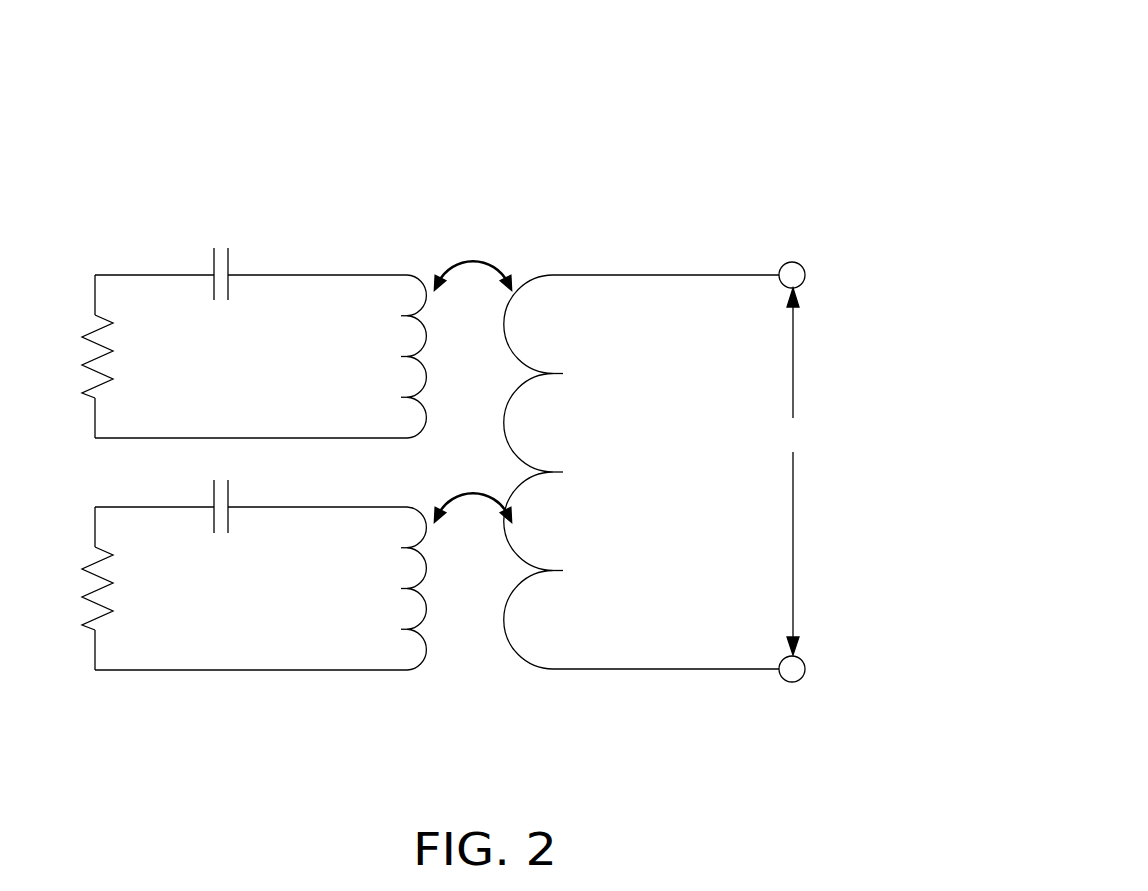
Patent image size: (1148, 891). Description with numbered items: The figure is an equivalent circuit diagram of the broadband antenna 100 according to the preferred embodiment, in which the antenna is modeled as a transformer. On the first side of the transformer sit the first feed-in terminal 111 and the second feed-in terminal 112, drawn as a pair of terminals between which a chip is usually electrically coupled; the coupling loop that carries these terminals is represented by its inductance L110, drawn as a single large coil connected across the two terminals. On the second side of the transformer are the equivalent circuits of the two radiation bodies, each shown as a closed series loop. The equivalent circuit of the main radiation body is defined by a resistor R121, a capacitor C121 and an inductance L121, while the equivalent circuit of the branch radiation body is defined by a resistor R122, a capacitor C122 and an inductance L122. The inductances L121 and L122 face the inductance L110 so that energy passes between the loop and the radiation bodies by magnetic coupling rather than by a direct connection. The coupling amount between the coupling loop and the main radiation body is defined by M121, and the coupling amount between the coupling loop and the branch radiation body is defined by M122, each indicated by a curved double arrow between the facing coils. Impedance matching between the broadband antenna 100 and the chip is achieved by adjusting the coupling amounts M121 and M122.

The broadband antenna 100 is at (845, 62).
The first feed-in terminal 111 is at (805, 274).
The second feed-in terminal 112 is at (805, 668).
The inductance L110 is at (641, 472).
The capacitor C121 is at (251, 250).
The resistor R121 is at (244, 356).
The inductance L121 is at (378, 356).
The coupling amount M121 is at (472, 254).
The capacitor C122 is at (251, 488).
The resistor R122 is at (244, 588).
The inductance L122 is at (374, 588).
The coupling amount M122 is at (469, 487).